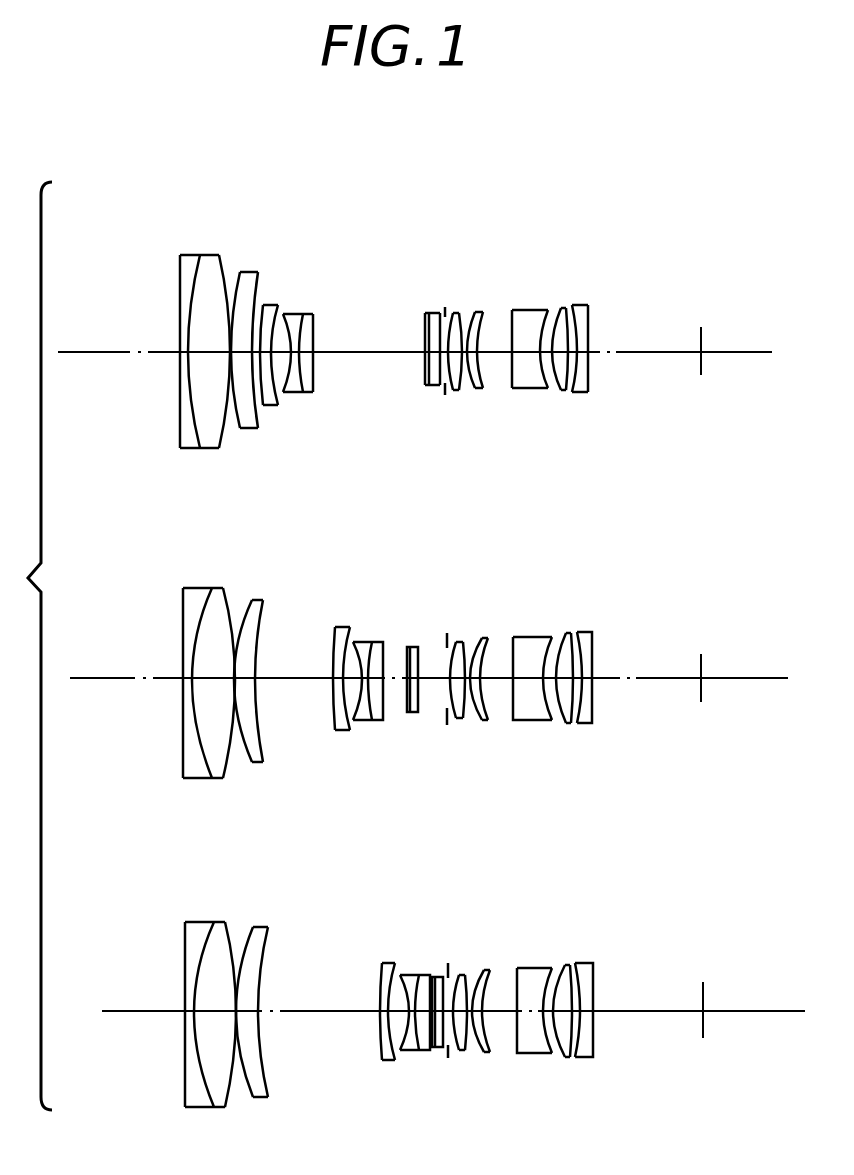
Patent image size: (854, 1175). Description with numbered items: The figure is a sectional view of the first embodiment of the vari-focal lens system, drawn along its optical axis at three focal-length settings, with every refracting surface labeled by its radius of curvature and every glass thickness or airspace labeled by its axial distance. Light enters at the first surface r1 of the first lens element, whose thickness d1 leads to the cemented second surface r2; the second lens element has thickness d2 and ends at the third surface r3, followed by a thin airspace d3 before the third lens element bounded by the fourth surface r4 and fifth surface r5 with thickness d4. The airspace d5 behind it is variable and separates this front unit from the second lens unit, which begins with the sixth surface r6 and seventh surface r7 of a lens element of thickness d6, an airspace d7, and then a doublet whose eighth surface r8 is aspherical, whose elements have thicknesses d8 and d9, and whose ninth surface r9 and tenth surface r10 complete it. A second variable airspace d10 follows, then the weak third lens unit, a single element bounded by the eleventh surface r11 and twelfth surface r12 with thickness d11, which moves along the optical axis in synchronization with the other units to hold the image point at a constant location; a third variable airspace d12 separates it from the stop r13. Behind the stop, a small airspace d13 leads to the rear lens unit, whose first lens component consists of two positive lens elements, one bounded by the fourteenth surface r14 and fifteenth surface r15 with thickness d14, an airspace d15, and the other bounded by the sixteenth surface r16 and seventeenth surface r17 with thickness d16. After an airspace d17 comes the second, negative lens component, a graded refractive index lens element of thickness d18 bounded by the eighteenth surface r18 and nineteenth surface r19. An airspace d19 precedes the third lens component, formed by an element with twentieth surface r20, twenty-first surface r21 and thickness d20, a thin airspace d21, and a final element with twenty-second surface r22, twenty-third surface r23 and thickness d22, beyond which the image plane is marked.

The first lens surface radius of curvature r1 is at (180, 277).
The second lens surface radius of curvature r2 is at (199, 262).
The third lens surface radius of curvature r3 is at (221, 258).
The fourth lens surface radius of curvature r4 is at (240, 285).
The fifth lens surface radius of curvature r5 is at (254, 285).
The sixth lens surface radius of curvature r6 is at (263, 310).
The seventh lens surface radius of curvature r7 is at (275, 306).
The eighth lens surface (aspherical surface) r8 is at (287, 320).
The ninth lens surface radius of curvature r9 is at (303, 320).
The tenth lens surface radius of curvature r10 is at (313, 335).
The eleventh lens surface radius of curvature r11 is at (425, 322).
The twelfth lens surface radius of curvature r12 is at (430, 318).
The stop r13 is at (440, 320).
The fourteenth lens surface radius of curvature r14 is at (452, 318).
The fifteenth lens surface radius of curvature r15 is at (464, 318).
The sixteenth lens surface radius of curvature r16 is at (482, 315).
The seventeenth lens surface radius of curvature r17 is at (483, 325).
The eighteenth lens surface radius of curvature r18 is at (515, 315).
The nineteenth lens surface radius of curvature r19 is at (540, 320).
The twentieth lens surface radius of curvature r20 is at (553, 315).
The twenty-first lens surface radius of curvature r21 is at (573, 308).
The twenty-second lens surface radius of curvature r22 is at (578, 312).
The twenty-third lens surface radius of curvature r23 is at (590, 320).
The first lens element thickness d1 is at (184, 358).
The second lens element thickness d2 is at (203, 357).
The airspace between third and fourth surfaces d3 is at (228, 345).
The third lens element thickness d4 is at (249, 430).
The variable airspace D1 d5 is at (263, 405).
The fourth lens element thickness d6 is at (271, 405).
The airspace between seventh and eighth surfaces d7 is at (281, 395).
The fifth lens element thickness d8 is at (298, 352).
The sixth lens element thickness d9 is at (304, 392).
The variable airspace D2 d10 is at (357, 355).
The seventh lens element thickness d11 is at (427, 360).
The variable airspace D3 d12 is at (436, 388).
The airspace between stop and fourteenth surface d13 is at (427, 345).
The eighth lens element thickness d14 is at (455, 390).
The airspace between fifteenth and sixteenth surfaces d15 is at (466, 390).
The ninth lens element thickness d16 is at (482, 390).
The airspace between seventeenth and eighteenth surfaces d17 is at (496, 357).
The graded refractive index lens element thickness d18 is at (523, 390).
The airspace between nineteenth and twentieth surfaces d19 is at (552, 390).
The eleventh lens element thickness d20 is at (567, 392).
The airspace between twenty-first and twenty-second surfaces d21 is at (570, 345).
The twelfth lens element thickness d22 is at (590, 392).